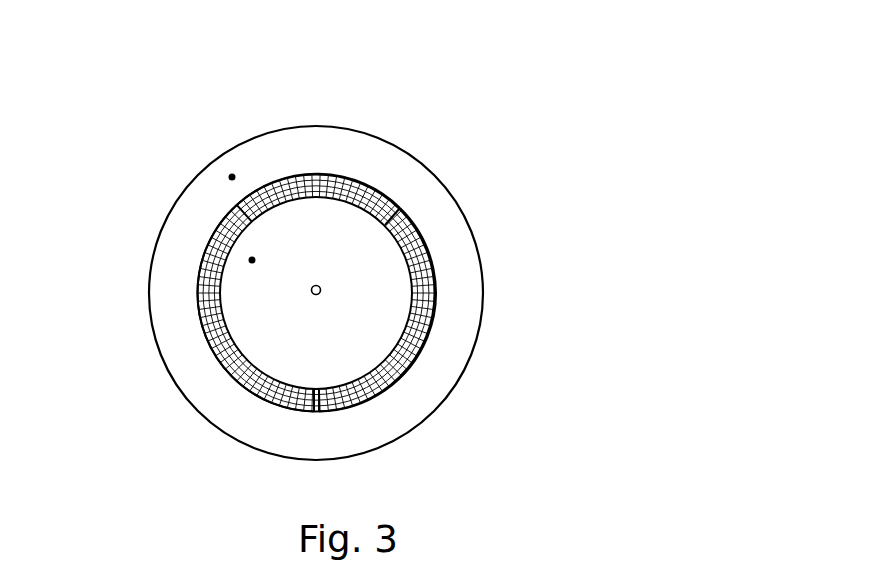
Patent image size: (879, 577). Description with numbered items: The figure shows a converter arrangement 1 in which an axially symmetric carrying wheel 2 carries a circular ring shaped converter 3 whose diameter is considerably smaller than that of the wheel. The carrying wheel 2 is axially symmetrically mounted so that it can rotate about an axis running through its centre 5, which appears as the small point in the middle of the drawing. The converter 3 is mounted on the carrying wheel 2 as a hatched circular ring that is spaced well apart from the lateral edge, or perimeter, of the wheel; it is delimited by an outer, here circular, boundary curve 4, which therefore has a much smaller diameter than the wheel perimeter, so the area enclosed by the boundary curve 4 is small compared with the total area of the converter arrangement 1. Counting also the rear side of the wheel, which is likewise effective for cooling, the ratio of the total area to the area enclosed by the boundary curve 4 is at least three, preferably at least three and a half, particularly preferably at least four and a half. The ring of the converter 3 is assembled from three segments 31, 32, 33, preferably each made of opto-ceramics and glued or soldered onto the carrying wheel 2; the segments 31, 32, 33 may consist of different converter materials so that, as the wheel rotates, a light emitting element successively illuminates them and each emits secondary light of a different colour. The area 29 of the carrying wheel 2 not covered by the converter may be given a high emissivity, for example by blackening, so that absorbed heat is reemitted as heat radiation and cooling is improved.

The converter arrangement 1 is at (439, 82).
The carrying wheel 2 is at (164, 223).
The converter 3 is at (407, 347).
The outer boundary curve 4 is at (246, 389).
The centre 5 is at (320, 286).
The area not covered by the converter 29 is at (252, 260).
The segment 31 is at (201, 320).
The segment 32 is at (302, 177).
The segment 33 is at (437, 297).